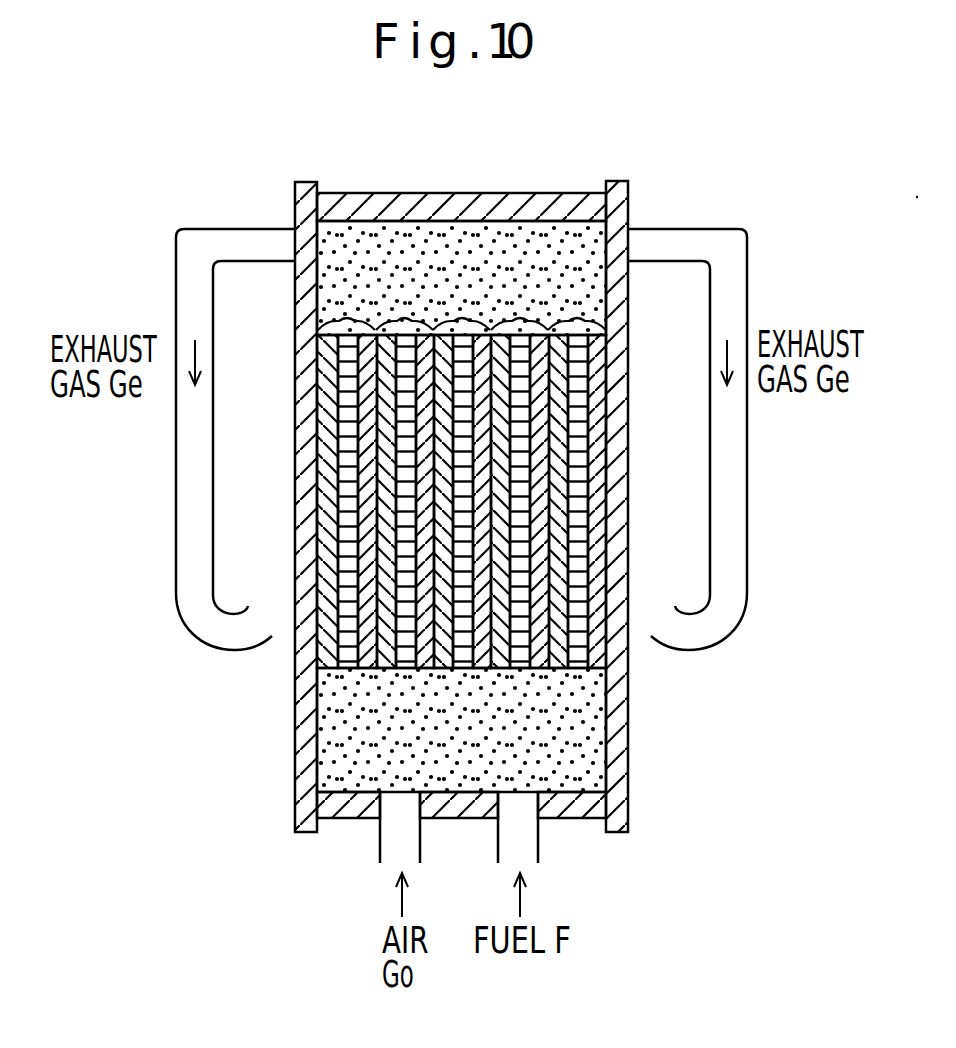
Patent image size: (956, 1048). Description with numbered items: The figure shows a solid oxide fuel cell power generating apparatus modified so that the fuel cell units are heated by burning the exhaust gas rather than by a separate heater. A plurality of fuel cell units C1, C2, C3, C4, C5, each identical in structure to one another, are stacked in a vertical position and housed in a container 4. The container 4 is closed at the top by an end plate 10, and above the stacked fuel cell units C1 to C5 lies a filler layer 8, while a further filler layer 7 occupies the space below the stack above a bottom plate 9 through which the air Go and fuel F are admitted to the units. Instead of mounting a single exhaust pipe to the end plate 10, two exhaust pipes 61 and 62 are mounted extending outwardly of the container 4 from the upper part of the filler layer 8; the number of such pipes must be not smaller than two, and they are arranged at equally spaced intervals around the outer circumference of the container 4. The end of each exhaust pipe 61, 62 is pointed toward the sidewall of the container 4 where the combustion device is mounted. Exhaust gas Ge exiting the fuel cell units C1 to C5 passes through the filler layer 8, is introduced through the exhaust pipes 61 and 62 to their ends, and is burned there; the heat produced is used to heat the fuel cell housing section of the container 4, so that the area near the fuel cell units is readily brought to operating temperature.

The container 4 is at (297, 752).
The lower porous body (gas supply side) 7 is at (598, 752).
The filler layer 8 is at (518, 237).
The bottom plate with gas inlet openings 9 is at (577, 820).
The end plate 10 is at (420, 193).
The exhaust pipe 61 is at (176, 245).
The exhaust pipe 62 is at (264, 640).
The fuel cell unit C1 is at (347, 475).
The fuel cell unit C2 is at (405, 475).
The fuel cell unit C3 is at (462, 475).
The fuel cell unit C4 is at (520, 475).
The fuel cell unit C5 is at (577, 475).